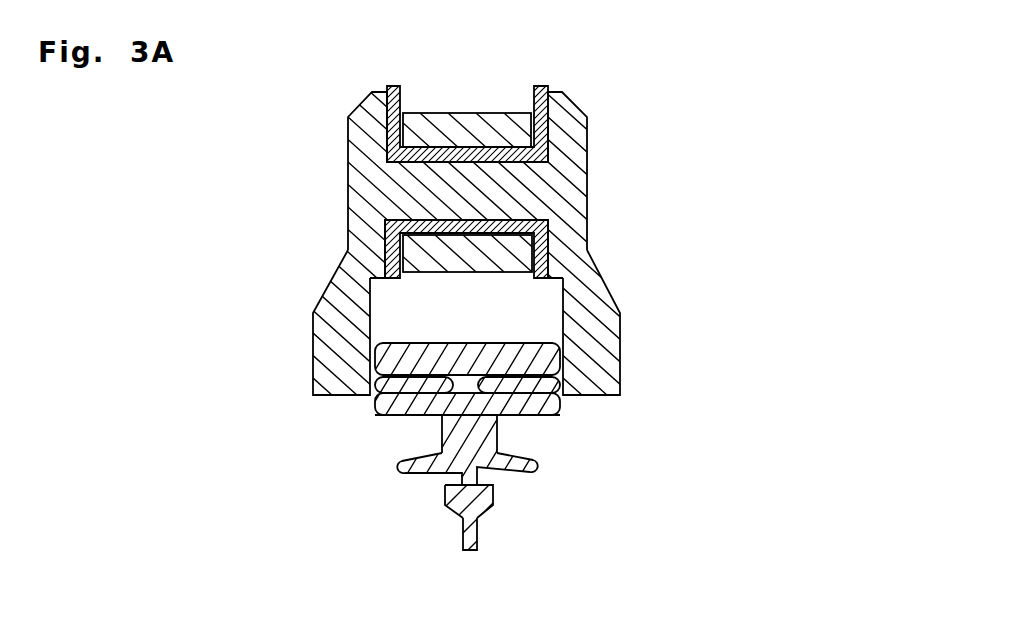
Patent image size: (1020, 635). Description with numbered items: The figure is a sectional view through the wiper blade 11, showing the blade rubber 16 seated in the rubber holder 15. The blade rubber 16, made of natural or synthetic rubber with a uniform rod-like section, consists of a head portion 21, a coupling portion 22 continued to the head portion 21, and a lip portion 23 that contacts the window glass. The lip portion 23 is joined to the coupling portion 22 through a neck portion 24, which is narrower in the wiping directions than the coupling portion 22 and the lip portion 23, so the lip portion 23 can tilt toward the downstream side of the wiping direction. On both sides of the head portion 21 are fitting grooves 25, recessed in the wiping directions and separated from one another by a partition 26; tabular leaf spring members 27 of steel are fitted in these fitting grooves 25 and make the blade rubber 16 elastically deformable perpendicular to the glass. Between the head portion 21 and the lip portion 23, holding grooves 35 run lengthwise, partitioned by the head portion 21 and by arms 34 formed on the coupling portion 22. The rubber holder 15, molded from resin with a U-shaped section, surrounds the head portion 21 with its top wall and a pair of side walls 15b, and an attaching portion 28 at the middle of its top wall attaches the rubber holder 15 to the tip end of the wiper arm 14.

The wiper blade 11 is at (669, 223).
The wiper arm 14 is at (467, 127).
The rubber holder 15 is at (600, 111).
The side walls 15b is at (590, 335).
The blade rubber 16 is at (542, 481).
The head portion 21 is at (525, 373).
The coupling portion 22 is at (497, 437).
The lip portion 23 is at (468, 530).
The neck portion 24 is at (462, 473).
The fitting grooves 25 is at (390, 346).
The partition 26 is at (467, 383).
The leaf spring members 27 is at (413, 380).
The attaching portion 28 is at (565, 183).
The arms 34 is at (398, 463).
The holding grooves 35 is at (423, 433).